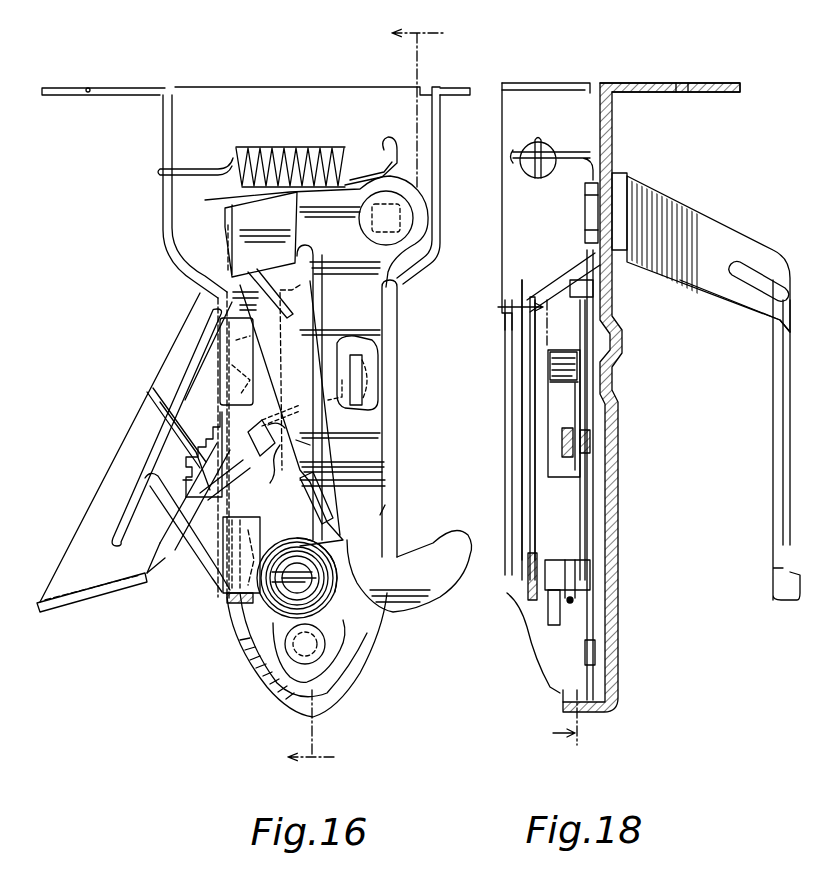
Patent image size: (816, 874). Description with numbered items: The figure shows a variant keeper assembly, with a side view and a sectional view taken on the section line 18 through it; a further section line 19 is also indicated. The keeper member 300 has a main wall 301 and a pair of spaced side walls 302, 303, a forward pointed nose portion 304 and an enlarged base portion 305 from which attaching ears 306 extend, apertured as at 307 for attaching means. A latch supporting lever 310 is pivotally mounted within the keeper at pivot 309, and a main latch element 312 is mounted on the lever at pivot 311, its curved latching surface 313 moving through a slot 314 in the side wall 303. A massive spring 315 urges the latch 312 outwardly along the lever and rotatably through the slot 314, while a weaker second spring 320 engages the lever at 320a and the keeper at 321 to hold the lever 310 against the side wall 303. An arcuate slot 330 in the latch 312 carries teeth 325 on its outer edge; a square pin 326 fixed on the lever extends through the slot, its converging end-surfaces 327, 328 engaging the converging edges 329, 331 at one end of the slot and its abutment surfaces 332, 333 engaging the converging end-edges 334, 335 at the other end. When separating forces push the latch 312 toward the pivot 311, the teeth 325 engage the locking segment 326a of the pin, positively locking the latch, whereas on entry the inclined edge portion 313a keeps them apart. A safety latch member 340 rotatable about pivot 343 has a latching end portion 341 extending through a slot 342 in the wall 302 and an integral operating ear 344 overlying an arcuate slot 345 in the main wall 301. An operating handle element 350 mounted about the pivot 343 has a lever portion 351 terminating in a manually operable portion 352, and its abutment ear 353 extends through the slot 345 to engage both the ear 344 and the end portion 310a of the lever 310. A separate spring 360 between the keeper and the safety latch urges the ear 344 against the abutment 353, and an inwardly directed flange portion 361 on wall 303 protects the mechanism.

In FIG. 16, the section line 18— 18 is at (366, 397).
In FIG. 18, the section line 19— 19 is at (522, 520).
In FIG. 16, the keeper member 300 is at (409, 425).
In FIG. 18, the keeper member 300 is at (631, 487).
In FIG. 16, the main wall 301 is at (243, 87).
In FIG. 18, the main wall 301 is at (614, 128).
In FIG. 16, the side wall 302 is at (398, 338).
In FIG. 16, the side wall 303 is at (218, 332).
In FIG. 18, the side wall 303 is at (520, 490).
In FIG. 16, the nose portion 304 is at (303, 713).
In FIG. 18, the nose portion 304 is at (587, 715).
In FIG. 16, the base portion 305 is at (163, 146).
In FIG. 16, the attaching ears 306 is at (57, 88).
In FIG. 18, the attaching ears 306 is at (584, 82).
In FIG. 16, the apertures 307 is at (94, 87).
In FIG. 18, the apertures 307 is at (548, 83).
In FIG. 16, the pivot 309 is at (323, 648).
In FIG. 18, the pivot 309 is at (590, 653).
In FIG. 16, the latch supporting lever 310 is at (264, 342).
In FIG. 18, the latch supporting lever 310 is at (593, 333).
In FIG. 16, the end portion of the lever 310a is at (250, 297).
In FIG. 18, the end portion of the lever 310a is at (572, 268).
In FIG. 16, the pivot 311 is at (283, 583).
In FIG. 18, the pivot 311 is at (557, 622).
In FIG. 16, the main latch element 312 is at (237, 557).
In FIG. 18, the main latch element 312 is at (575, 393).
In FIG. 16, the latching surface 313 is at (197, 453).
In FIG. 18, the latching surface 313 is at (573, 352).
In FIG. 16, the inclined main latch edge portion 313a is at (167, 562).
In FIG. 16, the slot 314 is at (222, 366).
In FIG. 18, the slot 314 is at (548, 378).
In FIG. 16, the spring 315 is at (287, 613).
In FIG. 18, the spring 315 is at (550, 630).
In FIG. 16, the second spring 320 is at (340, 606).
In FIG. 18, the second spring 320 is at (567, 603).
In FIG. 18, the spring end engagement with lever 320a is at (563, 580).
In FIG. 16, the spring end engagement with keeper 321 is at (360, 386).
In FIG. 16, the teeth 325 is at (160, 402).
In FIG. 16, the pin 326 is at (303, 473).
In FIG. 18, the pin 326 is at (562, 433).
In FIG. 16, the locking segment 326a is at (275, 413).
In FIG. 16, the converging end-surface 327 is at (280, 430).
In FIG. 16, the converging end-surface 328 is at (282, 447).
In FIG. 16, the converging edge of slot 329 is at (258, 428).
In FIG. 16, the slot 330 is at (187, 473).
In FIG. 16, the converging edge of slot 331 is at (305, 440).
In FIG. 16, the abutment surface 332 is at (218, 457).
In FIG. 16, the abutment surface 333 is at (248, 448).
In FIG. 16, the converging end-edge 334 is at (185, 478).
In FIG. 16, the converging end-edge 335 is at (187, 493).
In FIG. 16, the safety latch member 340 is at (372, 483).
In FIG. 18, the safety latch member 340 is at (530, 468).
In FIG. 16, the latching end portion 341 is at (434, 556).
In FIG. 18, the latching end portion 341 is at (520, 590).
In FIG. 16, the slot 342 is at (393, 505).
In FIG. 16, the pivot 343 is at (395, 218).
In FIG. 18, the pivot 343 is at (585, 200).
In FIG. 16, the operating abutment ear 344 is at (253, 203).
In FIG. 16, the arcuate slot 345 is at (228, 230).
In FIG. 16, the operating handle element 350 is at (129, 413).
In FIG. 18, the operating handle element 350 is at (694, 201).
In FIG. 16, the lever portion 351 is at (197, 315).
In FIG. 18, the lever portion 351 is at (783, 267).
In FIG. 16, the manually operable portion 352 is at (82, 612).
In FIG. 18, the manually operable portion 352 is at (792, 598).
In FIG. 16, the operating abutment ear 353 is at (233, 278).
In FIG. 18, the operating abutment ear 353 is at (570, 308).
In FIG. 16, the spring 360 is at (268, 148).
In FIG. 18, the spring 360 is at (530, 140).
In FIG. 16, the inwardly directed flange portion 361 is at (233, 580).
In FIG. 18, the inwardly directed flange portion 361 is at (512, 333).